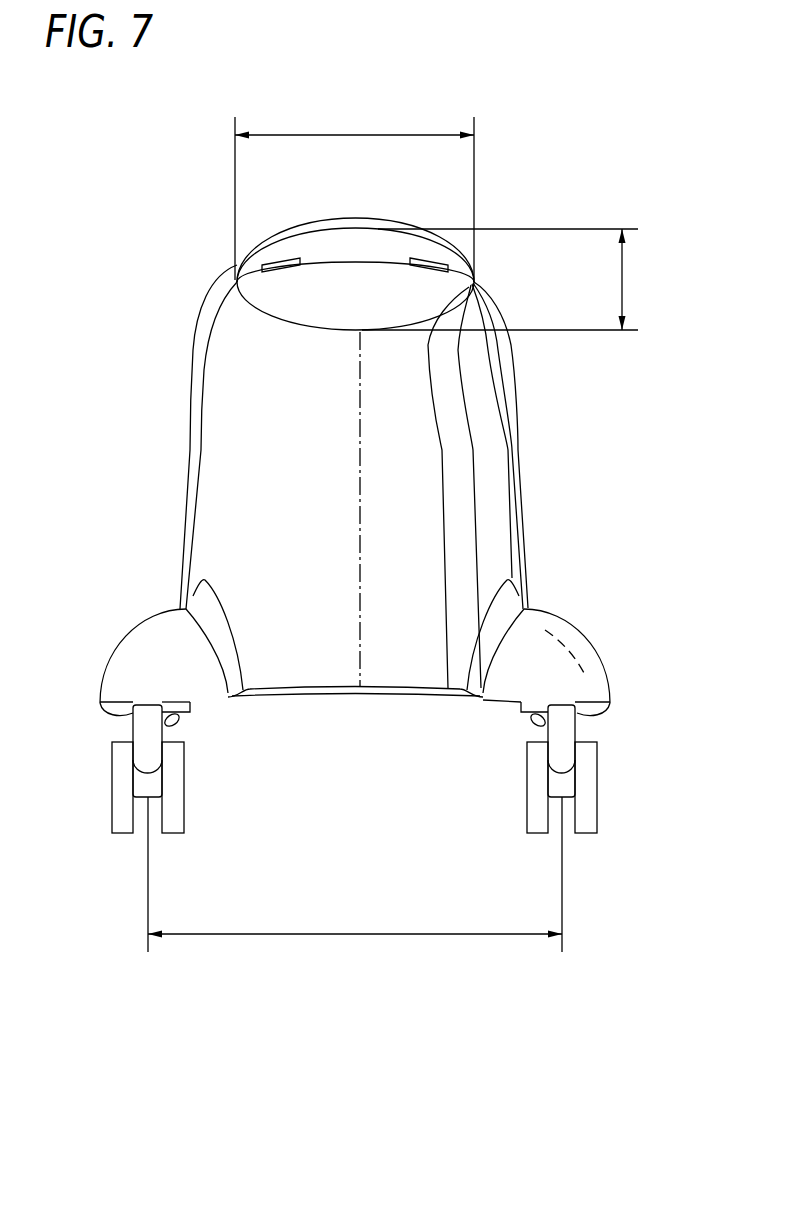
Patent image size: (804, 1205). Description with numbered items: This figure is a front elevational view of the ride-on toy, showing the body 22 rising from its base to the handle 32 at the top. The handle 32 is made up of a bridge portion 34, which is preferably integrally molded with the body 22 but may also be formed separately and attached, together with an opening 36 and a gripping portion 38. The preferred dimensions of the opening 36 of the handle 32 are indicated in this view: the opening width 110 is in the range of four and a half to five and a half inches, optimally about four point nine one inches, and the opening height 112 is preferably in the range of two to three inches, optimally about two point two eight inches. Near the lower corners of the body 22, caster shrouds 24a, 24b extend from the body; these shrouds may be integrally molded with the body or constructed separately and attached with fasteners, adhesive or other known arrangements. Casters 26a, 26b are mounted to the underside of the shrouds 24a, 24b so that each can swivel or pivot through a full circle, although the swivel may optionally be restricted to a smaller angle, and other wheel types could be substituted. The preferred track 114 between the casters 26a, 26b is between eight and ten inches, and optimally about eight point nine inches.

The body 22 is at (420, 516).
The caster shroud 24a is at (150, 648).
The caster shroud 24b is at (557, 653).
The caster 26a is at (115, 787).
The caster 26b is at (597, 787).
The handle 32 is at (168, 244).
The bridge portion 34 is at (356, 218).
The opening 36 is at (297, 322).
The gripping portion 38 is at (403, 247).
The opening width 110 is at (357, 134).
The opening height 112 is at (622, 278).
The track 114 is at (353, 934).